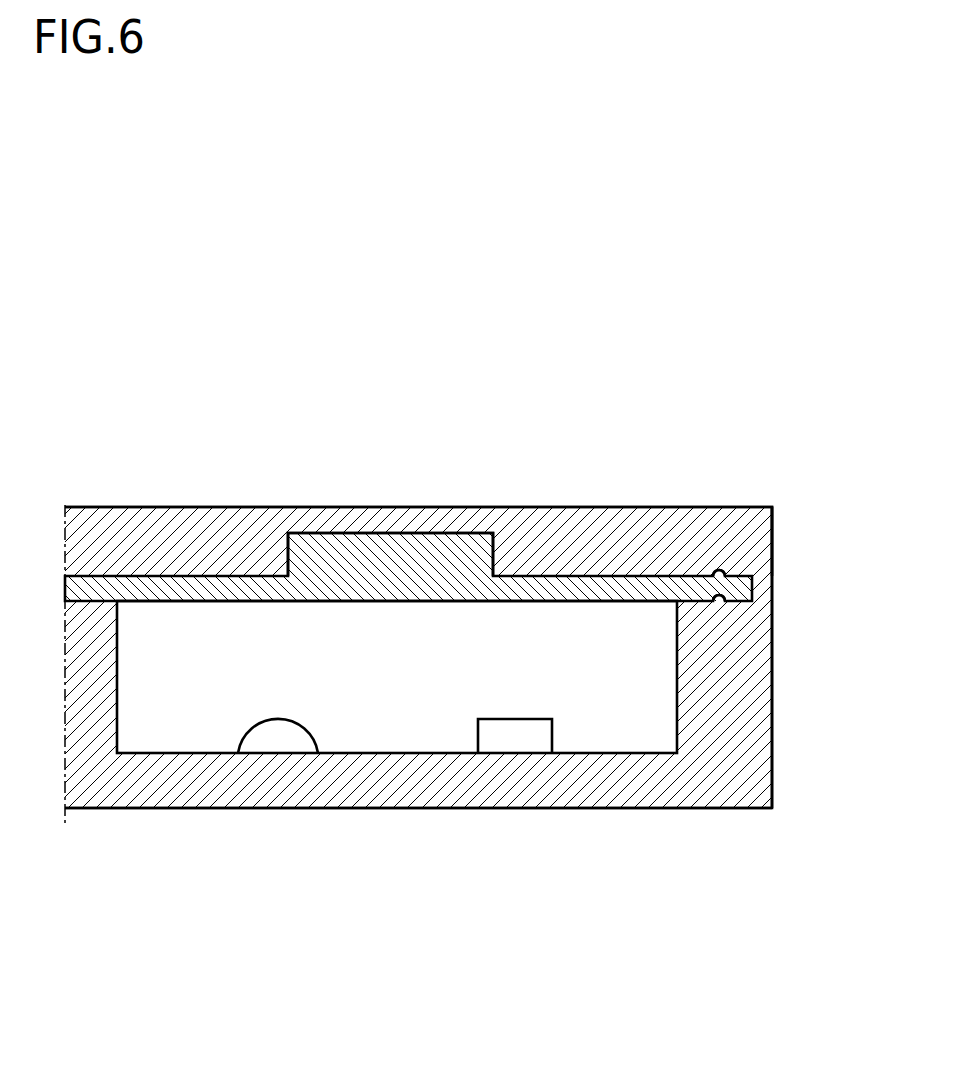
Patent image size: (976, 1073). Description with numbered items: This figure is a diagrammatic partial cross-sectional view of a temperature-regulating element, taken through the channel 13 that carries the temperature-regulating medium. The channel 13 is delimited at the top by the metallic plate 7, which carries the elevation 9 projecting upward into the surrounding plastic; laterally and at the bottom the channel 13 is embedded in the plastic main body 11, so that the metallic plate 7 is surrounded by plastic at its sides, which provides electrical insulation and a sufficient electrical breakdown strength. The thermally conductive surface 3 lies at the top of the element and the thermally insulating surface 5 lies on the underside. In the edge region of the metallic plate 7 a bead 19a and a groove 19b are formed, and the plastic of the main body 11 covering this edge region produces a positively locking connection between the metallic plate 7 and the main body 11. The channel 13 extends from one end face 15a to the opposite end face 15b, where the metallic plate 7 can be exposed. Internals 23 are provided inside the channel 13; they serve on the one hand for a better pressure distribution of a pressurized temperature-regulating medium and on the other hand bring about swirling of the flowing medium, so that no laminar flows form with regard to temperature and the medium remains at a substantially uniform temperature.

The thermally conductive surface 3 is at (148, 507).
The thermally insulating surface 5 is at (141, 808).
The metallic plate 7 is at (95, 590).
The elevation 9 is at (422, 533).
The main body 11 is at (712, 783).
The channel 13 is at (414, 677).
The end face 15a is at (418, 549).
The end face 15b is at (482, 360).
The bead 19a is at (726, 568).
The groove 19b is at (718, 603).
The internals 23 is at (516, 737).